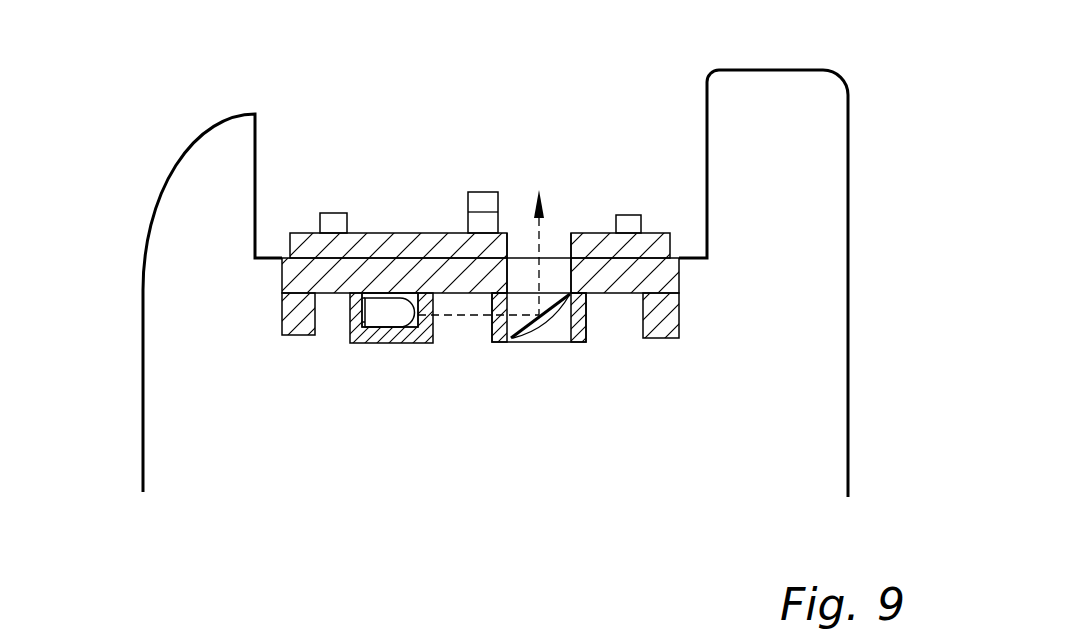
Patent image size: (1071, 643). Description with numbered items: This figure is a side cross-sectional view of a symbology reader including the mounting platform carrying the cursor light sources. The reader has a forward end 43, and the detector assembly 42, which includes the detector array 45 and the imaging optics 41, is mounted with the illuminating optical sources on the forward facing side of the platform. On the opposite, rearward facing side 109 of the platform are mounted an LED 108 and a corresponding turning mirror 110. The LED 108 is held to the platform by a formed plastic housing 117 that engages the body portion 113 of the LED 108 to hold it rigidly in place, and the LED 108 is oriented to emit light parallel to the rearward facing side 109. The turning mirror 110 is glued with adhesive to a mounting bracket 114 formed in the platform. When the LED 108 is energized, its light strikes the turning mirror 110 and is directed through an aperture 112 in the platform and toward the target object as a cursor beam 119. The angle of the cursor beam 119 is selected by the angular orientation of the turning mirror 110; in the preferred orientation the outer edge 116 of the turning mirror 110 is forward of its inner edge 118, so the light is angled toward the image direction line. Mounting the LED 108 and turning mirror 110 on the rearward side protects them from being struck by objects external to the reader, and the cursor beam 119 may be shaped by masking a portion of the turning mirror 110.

The forward end 43 is at (185, 152).
The imaging optics 41 is at (500, 222).
The aperture 112 is at (562, 240).
The cursor beam 119 is at (553, 267).
The detector assembly 42 is at (467, 222).
The detector array 45 is at (498, 203).
The mounting brackets 114 is at (487, 343).
The turning mirror 110 is at (578, 335).
The inner edge 118 is at (548, 325).
The outer edge 116 is at (525, 322).
The rearward facing side 109 is at (347, 342).
The body portions 113 is at (415, 320).
The LED 108 is at (380, 318).
The formed plastic housing 117 is at (335, 293).